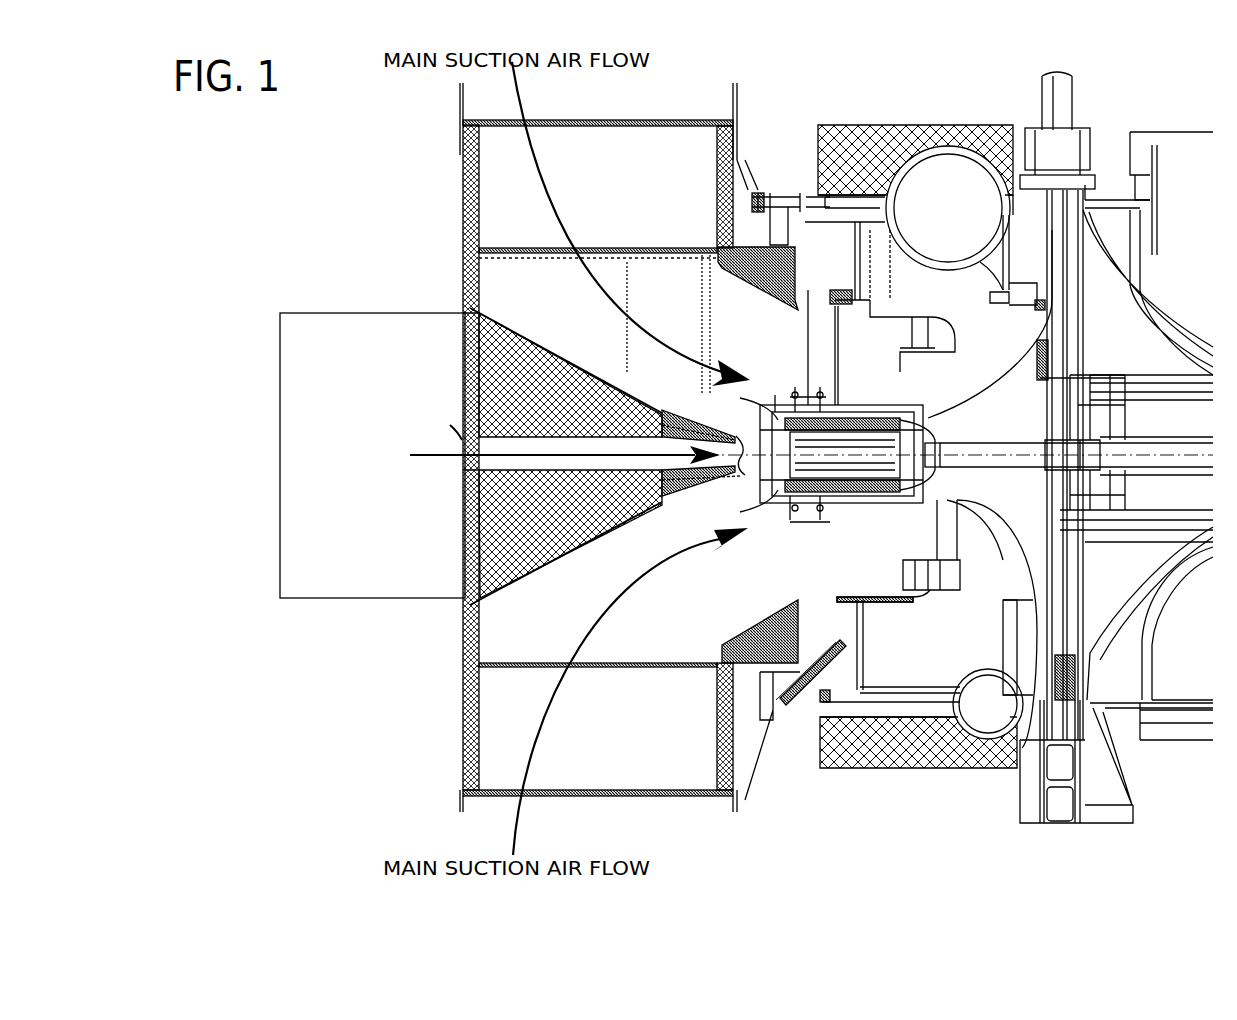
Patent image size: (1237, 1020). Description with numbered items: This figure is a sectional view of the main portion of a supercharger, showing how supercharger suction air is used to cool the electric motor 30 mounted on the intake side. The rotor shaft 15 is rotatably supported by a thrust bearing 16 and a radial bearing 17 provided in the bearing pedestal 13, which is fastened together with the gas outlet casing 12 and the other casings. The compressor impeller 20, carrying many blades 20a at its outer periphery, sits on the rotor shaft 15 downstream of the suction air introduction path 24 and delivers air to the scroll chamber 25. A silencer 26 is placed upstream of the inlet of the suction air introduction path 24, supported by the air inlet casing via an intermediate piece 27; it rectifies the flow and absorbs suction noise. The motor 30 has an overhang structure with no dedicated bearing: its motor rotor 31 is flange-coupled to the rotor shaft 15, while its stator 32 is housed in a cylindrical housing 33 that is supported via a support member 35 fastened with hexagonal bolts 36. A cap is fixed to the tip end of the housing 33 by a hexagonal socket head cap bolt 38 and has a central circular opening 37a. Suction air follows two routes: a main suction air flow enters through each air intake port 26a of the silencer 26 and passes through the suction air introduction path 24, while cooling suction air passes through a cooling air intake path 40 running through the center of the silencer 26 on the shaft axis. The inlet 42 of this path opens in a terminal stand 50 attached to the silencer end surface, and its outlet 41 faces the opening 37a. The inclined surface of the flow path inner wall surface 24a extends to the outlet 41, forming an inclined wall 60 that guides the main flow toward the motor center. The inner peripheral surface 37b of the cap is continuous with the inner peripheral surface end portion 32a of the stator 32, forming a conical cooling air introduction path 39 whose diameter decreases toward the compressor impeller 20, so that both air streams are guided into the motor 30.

The gas outlet casing 12 is at (1160, 148).
The bearing pedestal 13 is at (1092, 148).
The rotor shaft 15 is at (1140, 542).
The thrust bearing 16 is at (1050, 440).
The radial bearing 17 is at (1122, 413).
The compressor impeller 20 is at (933, 585).
The blades 20a is at (995, 590).
The suction air introduction path 24 is at (667, 292).
The flow path inner wall surface 24a is at (553, 565).
The scroll chamber 25 is at (978, 745).
The silencer 26 is at (463, 700).
The air intake port 26a is at (605, 120).
The intermediate piece 27 is at (767, 193).
The motor 30 is at (862, 505).
The motor rotor 31 is at (885, 428).
The stator 32 is at (855, 420).
The inner peripheral surface end portion 32a is at (776, 520).
The housing 33 is at (838, 415).
The support member 35 is at (812, 340).
The hexagonal bolts 36 is at (818, 298).
The circular opening 37a is at (705, 480).
The inner peripheral surface 37b is at (652, 478).
The hexagonal socket head cap bolt 38 is at (787, 302).
The conical cooling air introduction path 39 is at (748, 432).
The cooling air intake path 40 is at (540, 578).
The outlet 41 is at (725, 425).
The inlet 42 is at (462, 466).
The terminal stand 50 is at (312, 600).
The inclined wall 60 is at (690, 523).